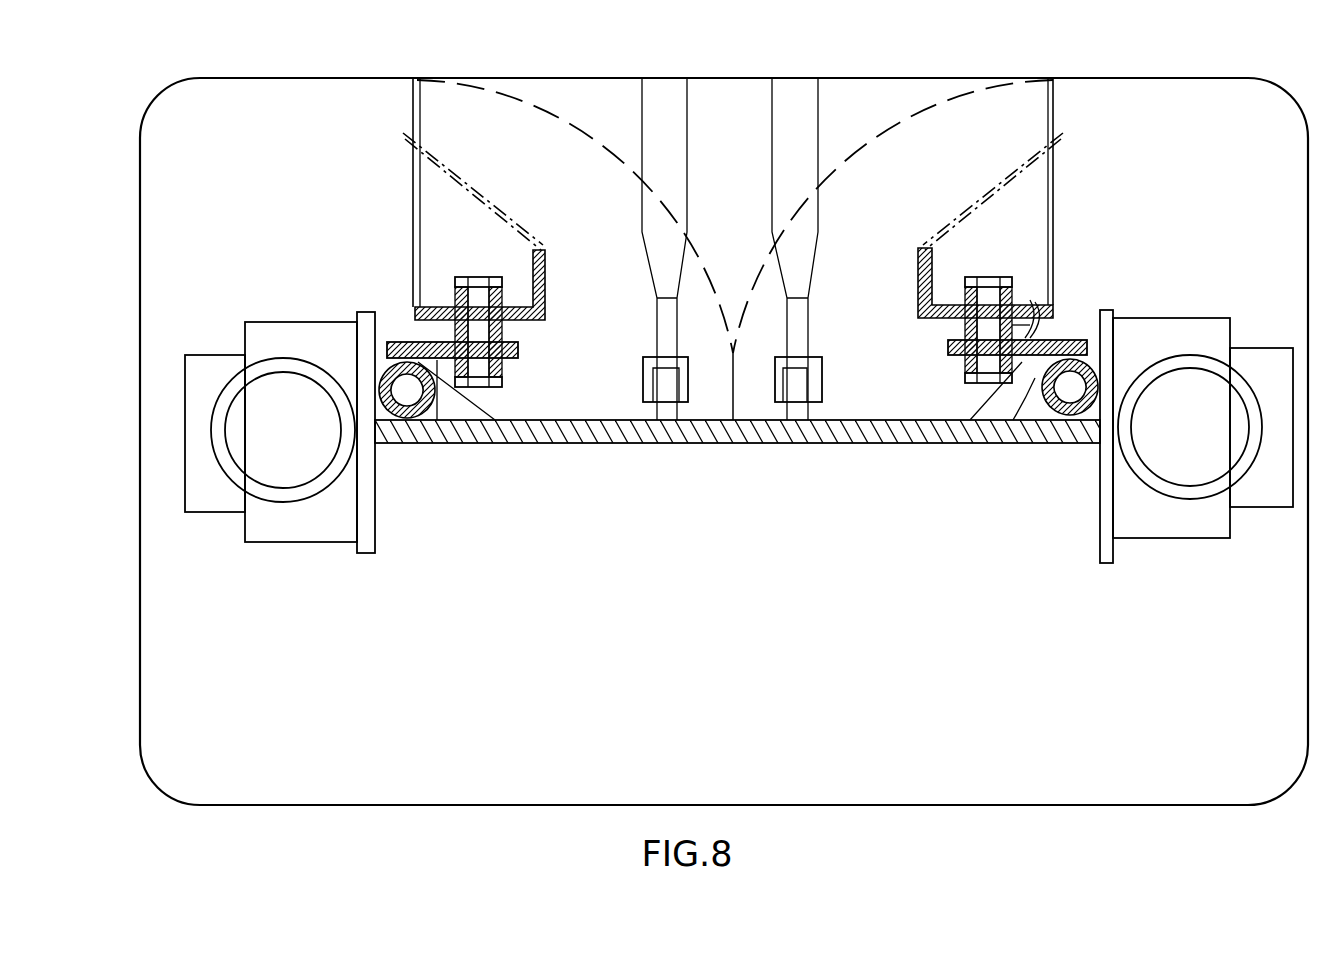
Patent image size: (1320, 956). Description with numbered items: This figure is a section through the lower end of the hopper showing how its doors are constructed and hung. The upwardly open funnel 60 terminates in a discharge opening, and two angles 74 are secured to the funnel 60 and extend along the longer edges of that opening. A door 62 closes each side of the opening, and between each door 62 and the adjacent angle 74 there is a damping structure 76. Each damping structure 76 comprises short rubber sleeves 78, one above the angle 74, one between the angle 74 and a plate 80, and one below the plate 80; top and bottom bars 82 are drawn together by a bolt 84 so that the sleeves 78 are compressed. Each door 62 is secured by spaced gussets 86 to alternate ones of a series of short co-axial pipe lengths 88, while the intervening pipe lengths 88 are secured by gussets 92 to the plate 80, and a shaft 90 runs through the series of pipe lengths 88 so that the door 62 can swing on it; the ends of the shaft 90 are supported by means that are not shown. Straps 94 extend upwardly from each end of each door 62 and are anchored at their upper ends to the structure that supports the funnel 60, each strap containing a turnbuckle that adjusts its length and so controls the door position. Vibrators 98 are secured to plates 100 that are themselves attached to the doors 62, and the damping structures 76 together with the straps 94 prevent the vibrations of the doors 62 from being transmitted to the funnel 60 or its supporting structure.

The funnel 60 is at (476, 186).
The door 62 is at (566, 444).
The angle 74 is at (547, 278).
The damping structure 76 is at (396, 322).
The rubber sleeve 78 is at (1032, 300).
The plate 80 is at (948, 348).
The top and bottom bars 82 is at (978, 276).
The bolt 84 is at (988, 328).
The gusset 86 is at (493, 412).
The pipe length 88 is at (438, 366).
The shaft 90 is at (406, 395).
The gusset 92 is at (438, 306).
The strap 94 is at (690, 92).
The vibrator 98 is at (209, 513).
The plate 100 is at (353, 554).